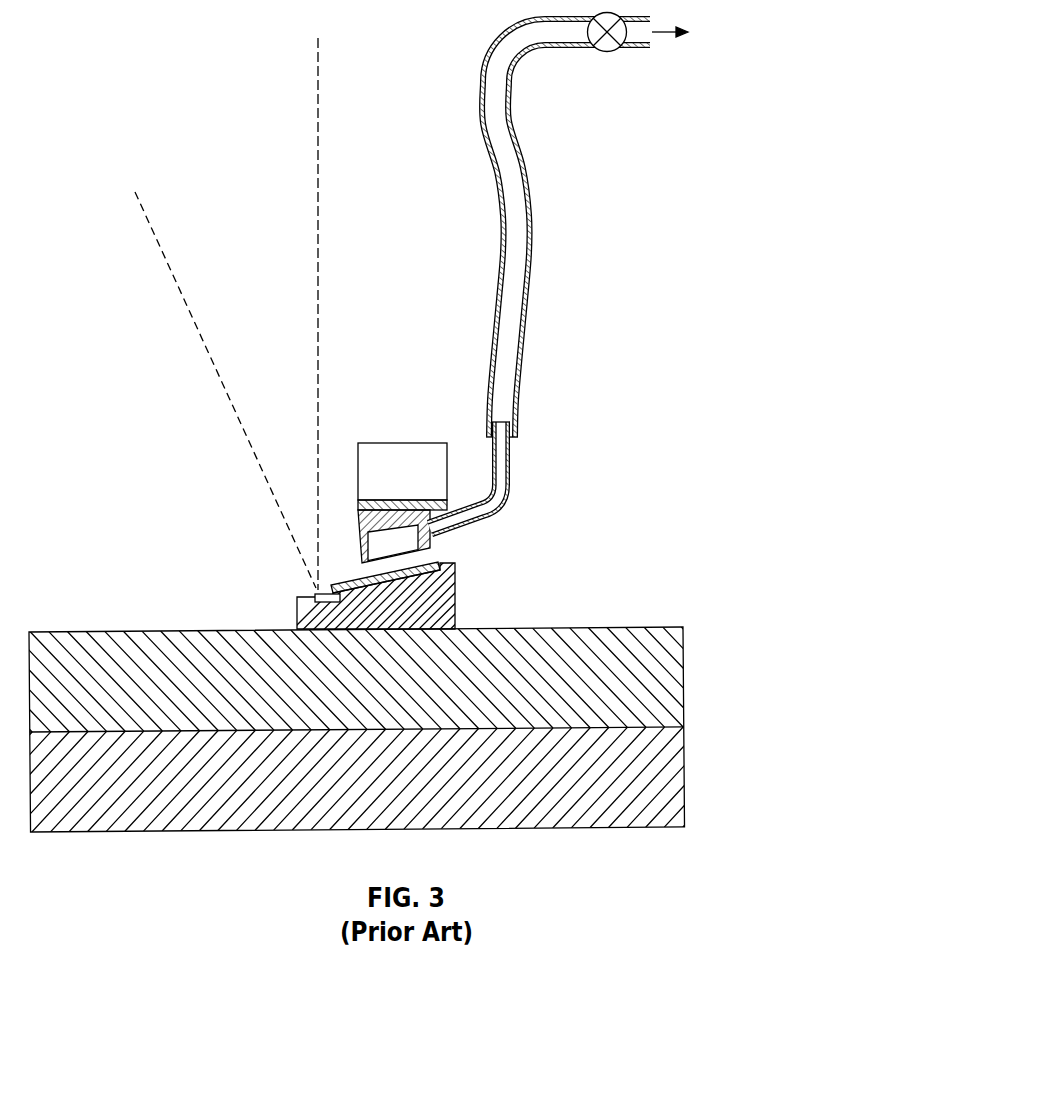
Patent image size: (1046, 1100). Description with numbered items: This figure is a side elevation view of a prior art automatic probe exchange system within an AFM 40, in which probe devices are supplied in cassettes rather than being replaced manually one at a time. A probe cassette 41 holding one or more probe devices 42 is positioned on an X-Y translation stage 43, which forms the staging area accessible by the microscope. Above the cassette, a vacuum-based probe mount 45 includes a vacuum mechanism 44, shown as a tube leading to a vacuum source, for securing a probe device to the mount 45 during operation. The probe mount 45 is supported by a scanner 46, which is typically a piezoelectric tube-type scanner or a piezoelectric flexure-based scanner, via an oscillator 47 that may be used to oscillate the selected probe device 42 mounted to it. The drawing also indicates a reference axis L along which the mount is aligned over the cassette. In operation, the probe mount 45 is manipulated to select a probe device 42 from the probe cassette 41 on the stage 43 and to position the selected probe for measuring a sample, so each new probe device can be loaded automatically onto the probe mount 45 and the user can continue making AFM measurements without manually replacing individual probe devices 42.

The AFM 40 is at (139, 66).
The probe cassette 41 is at (455, 595).
The probe device 42 is at (437, 558).
The X-Y translation stage 43 is at (632, 628).
The vacuum mechanism 44 is at (538, 248).
The probe mount 45 is at (356, 557).
The scanner 46 is at (360, 443).
The oscillator 47 is at (358, 507).
The vertical axis L is at (318, 157).